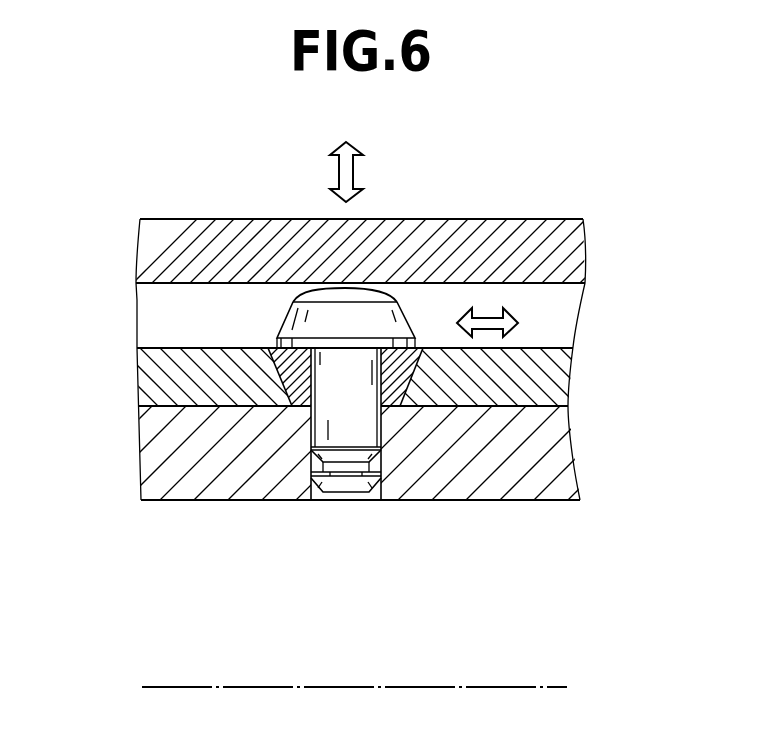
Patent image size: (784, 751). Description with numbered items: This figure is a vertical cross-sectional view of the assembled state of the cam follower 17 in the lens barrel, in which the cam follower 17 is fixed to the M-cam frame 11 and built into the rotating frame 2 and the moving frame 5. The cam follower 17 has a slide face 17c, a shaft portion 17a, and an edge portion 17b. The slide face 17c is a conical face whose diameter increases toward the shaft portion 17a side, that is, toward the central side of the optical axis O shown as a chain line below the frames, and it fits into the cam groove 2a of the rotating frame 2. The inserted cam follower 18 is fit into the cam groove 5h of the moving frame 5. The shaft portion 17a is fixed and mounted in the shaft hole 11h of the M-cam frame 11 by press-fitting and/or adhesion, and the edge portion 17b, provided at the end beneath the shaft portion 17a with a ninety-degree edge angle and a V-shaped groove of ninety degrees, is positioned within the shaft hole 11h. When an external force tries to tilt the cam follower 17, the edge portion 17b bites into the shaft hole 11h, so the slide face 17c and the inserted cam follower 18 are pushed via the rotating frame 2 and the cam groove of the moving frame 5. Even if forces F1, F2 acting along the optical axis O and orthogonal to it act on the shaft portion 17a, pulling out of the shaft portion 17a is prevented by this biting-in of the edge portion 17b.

The rotating frame 2 is at (537, 231).
The cam groove of the rotating frame 2a is at (557, 300).
The moving frame 5 is at (555, 355).
The cam groove of the moving frame 5h is at (413, 385).
The M-cam frame 11 is at (575, 452).
The shaft hole 11h is at (383, 462).
The cam follower 17 is at (327, 290).
The shaft portion 17a is at (310, 434).
The edge portion 17b is at (311, 476).
The slide face 17c is at (285, 320).
The inserted cam follower 18 is at (280, 375).
The force F1 is at (486, 312).
The force F2 is at (353, 172).
The optical axis O is at (500, 687).